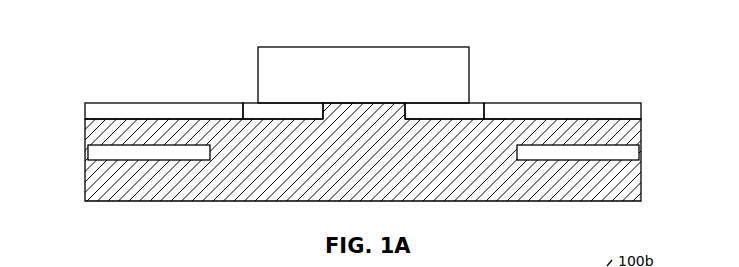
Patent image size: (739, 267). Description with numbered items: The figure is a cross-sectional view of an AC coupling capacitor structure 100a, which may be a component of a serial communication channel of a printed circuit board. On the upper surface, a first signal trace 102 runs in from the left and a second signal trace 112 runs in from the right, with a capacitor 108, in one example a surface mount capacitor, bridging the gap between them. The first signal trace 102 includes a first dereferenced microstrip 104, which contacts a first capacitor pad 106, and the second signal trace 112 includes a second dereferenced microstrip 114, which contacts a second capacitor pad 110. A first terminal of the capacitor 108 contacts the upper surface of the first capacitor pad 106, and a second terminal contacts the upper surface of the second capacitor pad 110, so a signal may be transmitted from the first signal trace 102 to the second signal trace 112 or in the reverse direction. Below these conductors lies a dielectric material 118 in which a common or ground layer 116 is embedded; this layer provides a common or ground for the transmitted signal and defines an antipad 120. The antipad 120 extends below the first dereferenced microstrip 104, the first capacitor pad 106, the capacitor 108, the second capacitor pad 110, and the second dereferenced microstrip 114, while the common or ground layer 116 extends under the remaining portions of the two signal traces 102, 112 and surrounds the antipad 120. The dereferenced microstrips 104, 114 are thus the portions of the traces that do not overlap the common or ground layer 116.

The AC coupling capacitor structure 100a is at (367, 118).
The first signal trace 102 is at (197, 89).
The first dereferenced microstrip 104 is at (227, 110).
The first capacitor pad 106 is at (252, 110).
The capacitor 108 is at (360, 52).
The second capacitor pad 110 is at (477, 110).
The second signal trace 112 is at (536, 87).
The second dereferenced microstrip 114 is at (503, 110).
The common or ground layer 116 is at (90, 152).
The dielectric material 118 is at (633, 190).
The antipad 120 is at (368, 150).